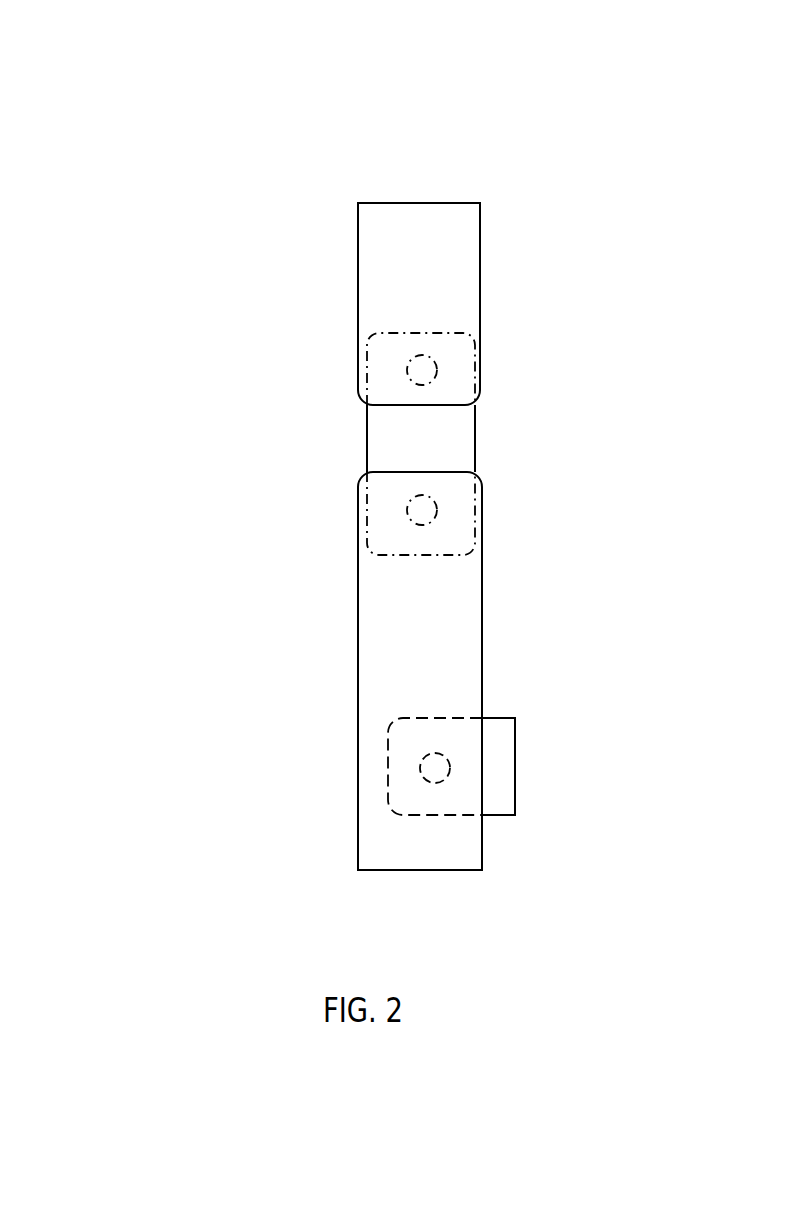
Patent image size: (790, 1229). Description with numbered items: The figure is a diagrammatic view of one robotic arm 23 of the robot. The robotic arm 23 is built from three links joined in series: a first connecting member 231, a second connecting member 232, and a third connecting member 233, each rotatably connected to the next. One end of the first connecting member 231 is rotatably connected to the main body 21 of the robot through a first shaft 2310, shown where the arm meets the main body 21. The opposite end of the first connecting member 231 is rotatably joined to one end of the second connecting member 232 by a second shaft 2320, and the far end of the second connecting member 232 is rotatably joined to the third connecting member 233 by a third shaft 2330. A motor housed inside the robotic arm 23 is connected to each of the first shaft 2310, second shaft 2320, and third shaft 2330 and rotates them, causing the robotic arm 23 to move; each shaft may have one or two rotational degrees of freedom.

The robotic arm 23 is at (192, 98).
The third connecting member 233 is at (392, 222).
The third shaft 2330 is at (413, 365).
The second connecting member 232 is at (382, 432).
The second shaft 2320 is at (413, 508).
The first connecting member 231 is at (400, 620).
The first shaft 2310 is at (427, 762).
The main body 21 is at (503, 755).